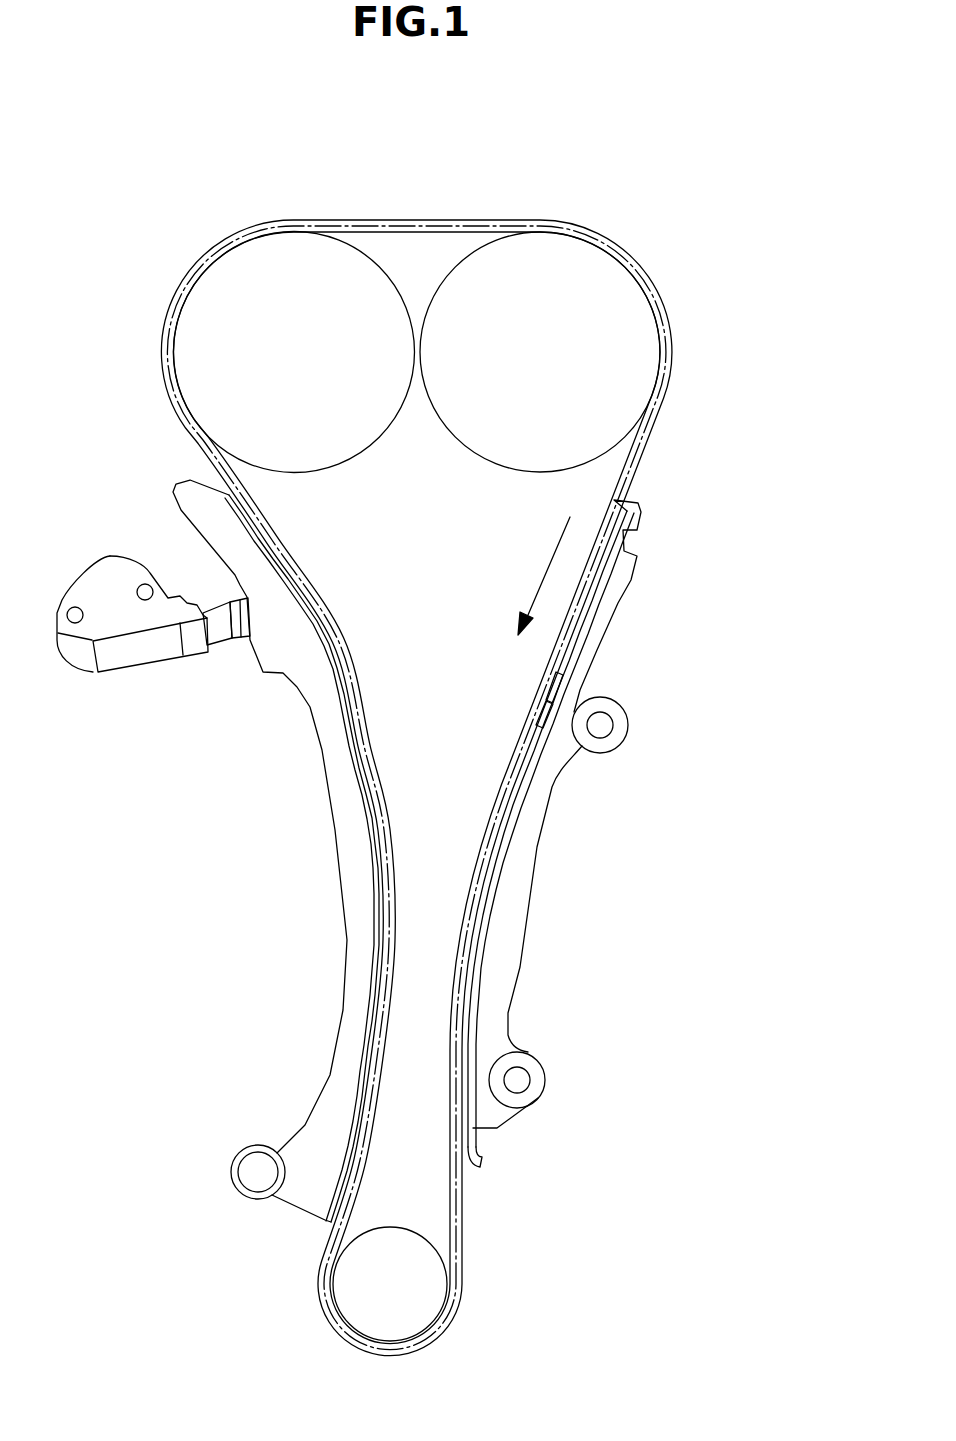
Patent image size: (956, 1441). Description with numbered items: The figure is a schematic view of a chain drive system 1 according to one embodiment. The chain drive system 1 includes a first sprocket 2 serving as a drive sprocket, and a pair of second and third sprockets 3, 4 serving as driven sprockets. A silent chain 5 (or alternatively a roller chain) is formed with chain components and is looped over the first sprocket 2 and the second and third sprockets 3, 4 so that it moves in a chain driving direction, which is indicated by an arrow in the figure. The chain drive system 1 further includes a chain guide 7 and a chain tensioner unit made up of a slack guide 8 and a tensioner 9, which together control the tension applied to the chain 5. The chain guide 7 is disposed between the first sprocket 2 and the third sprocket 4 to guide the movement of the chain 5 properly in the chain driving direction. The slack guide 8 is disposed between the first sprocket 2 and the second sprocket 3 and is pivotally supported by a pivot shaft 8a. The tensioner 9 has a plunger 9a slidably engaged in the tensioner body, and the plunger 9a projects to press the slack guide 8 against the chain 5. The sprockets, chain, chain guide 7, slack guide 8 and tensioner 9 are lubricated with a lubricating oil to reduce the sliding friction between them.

The chain drive system 1 is at (445, 178).
The first sprocket 2 is at (425, 1298).
The second sprocket 3 is at (237, 283).
The third sprocket 4 is at (602, 290).
The silent chain 5 is at (458, 1214).
The chain guide 7 is at (592, 688).
The slack guide 8 is at (258, 851).
The pivot shaft 8a is at (245, 1170).
The tensioner 9 is at (153, 619).
The plunger 9a is at (227, 643).